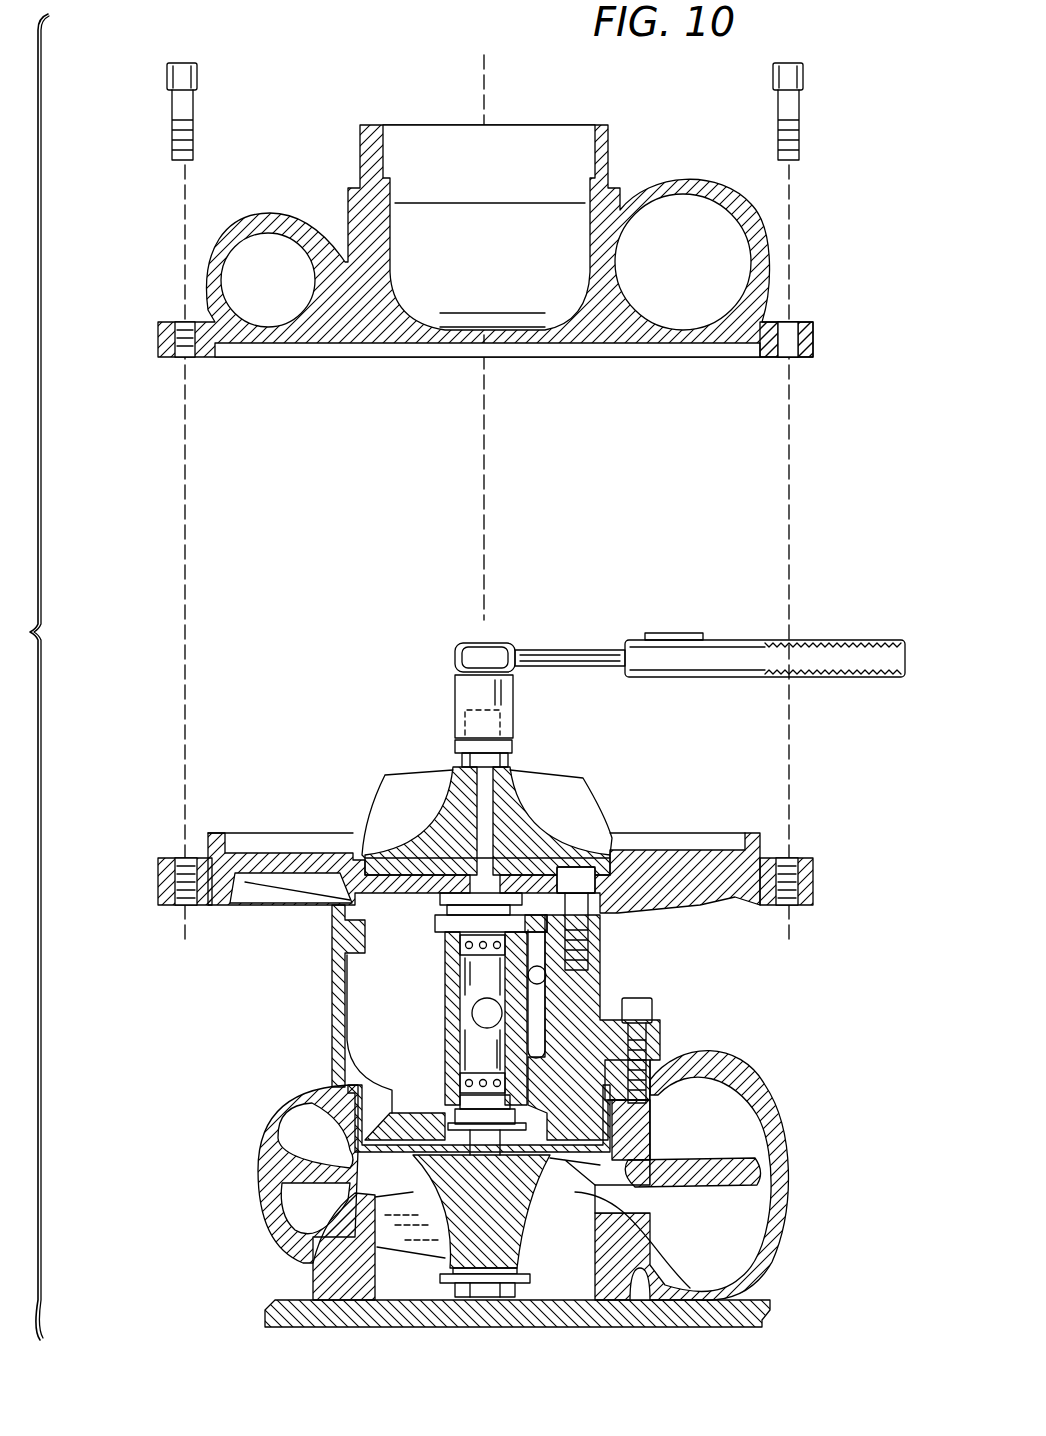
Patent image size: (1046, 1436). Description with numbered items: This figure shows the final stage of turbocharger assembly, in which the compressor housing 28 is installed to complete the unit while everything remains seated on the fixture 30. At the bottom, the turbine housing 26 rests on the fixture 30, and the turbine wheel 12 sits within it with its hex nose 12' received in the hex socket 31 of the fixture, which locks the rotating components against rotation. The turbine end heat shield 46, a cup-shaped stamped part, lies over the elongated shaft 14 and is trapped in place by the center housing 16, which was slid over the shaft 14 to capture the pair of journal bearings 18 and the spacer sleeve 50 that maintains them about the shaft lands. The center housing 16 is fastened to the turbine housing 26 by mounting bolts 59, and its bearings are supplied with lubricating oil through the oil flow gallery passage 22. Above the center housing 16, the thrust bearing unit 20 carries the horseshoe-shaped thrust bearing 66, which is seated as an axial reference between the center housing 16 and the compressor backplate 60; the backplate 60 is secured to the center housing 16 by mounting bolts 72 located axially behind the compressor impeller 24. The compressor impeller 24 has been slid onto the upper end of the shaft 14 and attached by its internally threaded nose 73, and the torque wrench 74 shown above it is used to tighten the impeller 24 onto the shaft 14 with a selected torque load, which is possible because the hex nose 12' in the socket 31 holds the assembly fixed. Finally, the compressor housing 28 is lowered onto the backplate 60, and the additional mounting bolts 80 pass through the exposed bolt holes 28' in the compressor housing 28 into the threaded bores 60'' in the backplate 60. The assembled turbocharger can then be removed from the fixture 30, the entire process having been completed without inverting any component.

The mounting bolts 80 is at (198, 112).
The compressor housing 28 is at (485, 226).
The bolt holes 28' is at (810, 304).
The torque wrench 74 is at (572, 649).
The internally threaded nose 73 is at (505, 718).
The elongated shaft 14 is at (480, 805).
The compressor impeller 24 is at (533, 830).
The thrust bearing unit 20 is at (418, 910).
The mounting bolts 72 is at (586, 878).
The compressor backplate 60 is at (484, 892).
The threaded bores 60'' is at (483, 851).
The horseshoe-shaped thrust bearing 66 is at (547, 923).
The center housing 16 is at (335, 940).
The journal bearings 18 is at (465, 950).
The spacer sleeve 50 is at (480, 985).
The mounting bolts 59 is at (653, 1012).
The oil flow gallery passage 22 is at (648, 1097).
The turbine housing 26 is at (765, 1100).
The turbine end heat shield 46 is at (572, 1150).
The turbine wheel 12 is at (456, 1227).
The fixture 30 is at (750, 1300).
The hex socket 31 is at (445, 1290).
The hex nose 12' is at (503, 1324).